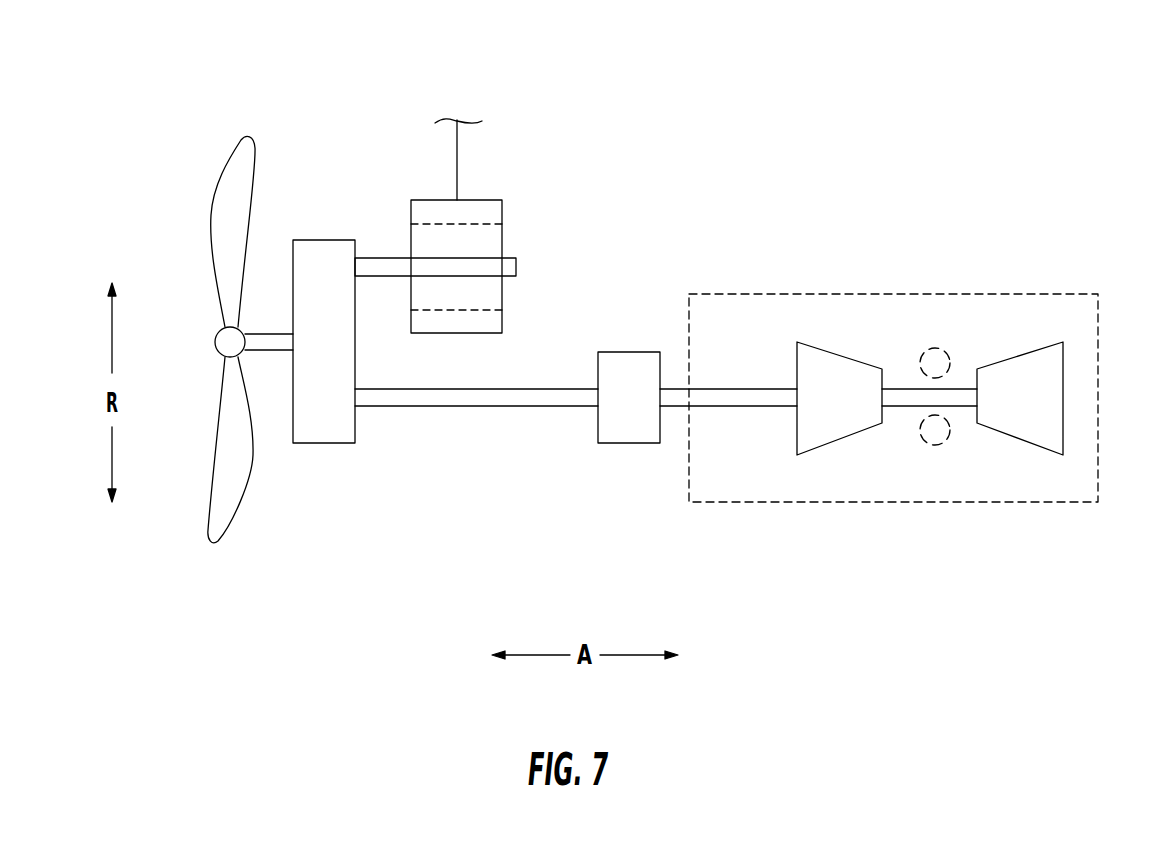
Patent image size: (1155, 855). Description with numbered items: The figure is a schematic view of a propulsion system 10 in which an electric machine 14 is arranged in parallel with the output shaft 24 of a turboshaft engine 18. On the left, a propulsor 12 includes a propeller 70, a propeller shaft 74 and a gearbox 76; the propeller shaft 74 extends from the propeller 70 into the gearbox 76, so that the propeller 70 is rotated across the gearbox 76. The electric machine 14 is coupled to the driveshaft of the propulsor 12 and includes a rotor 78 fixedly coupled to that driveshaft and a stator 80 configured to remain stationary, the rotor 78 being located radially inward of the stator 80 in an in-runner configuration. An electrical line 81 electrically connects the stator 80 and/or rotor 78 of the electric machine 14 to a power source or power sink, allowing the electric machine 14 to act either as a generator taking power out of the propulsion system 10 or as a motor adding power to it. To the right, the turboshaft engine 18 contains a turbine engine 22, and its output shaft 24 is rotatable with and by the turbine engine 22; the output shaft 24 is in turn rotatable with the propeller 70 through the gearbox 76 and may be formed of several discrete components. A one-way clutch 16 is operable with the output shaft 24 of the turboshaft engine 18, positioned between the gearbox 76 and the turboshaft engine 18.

The propulsion system 10 is at (778, 146).
The propulsor 12 is at (314, 321).
The electric machine 14 is at (503, 300).
The one-way clutch 16 is at (635, 443).
The turboshaft engine 18 is at (853, 295).
The turbine engine 22 is at (966, 312).
The output shaft 24 is at (532, 407).
The propeller 70 is at (227, 180).
The propeller shaft 74 is at (250, 352).
The gearbox 76 is at (318, 443).
The rotor 78 is at (503, 213).
The stator 80 is at (503, 248).
The electrical line 81 is at (458, 162).